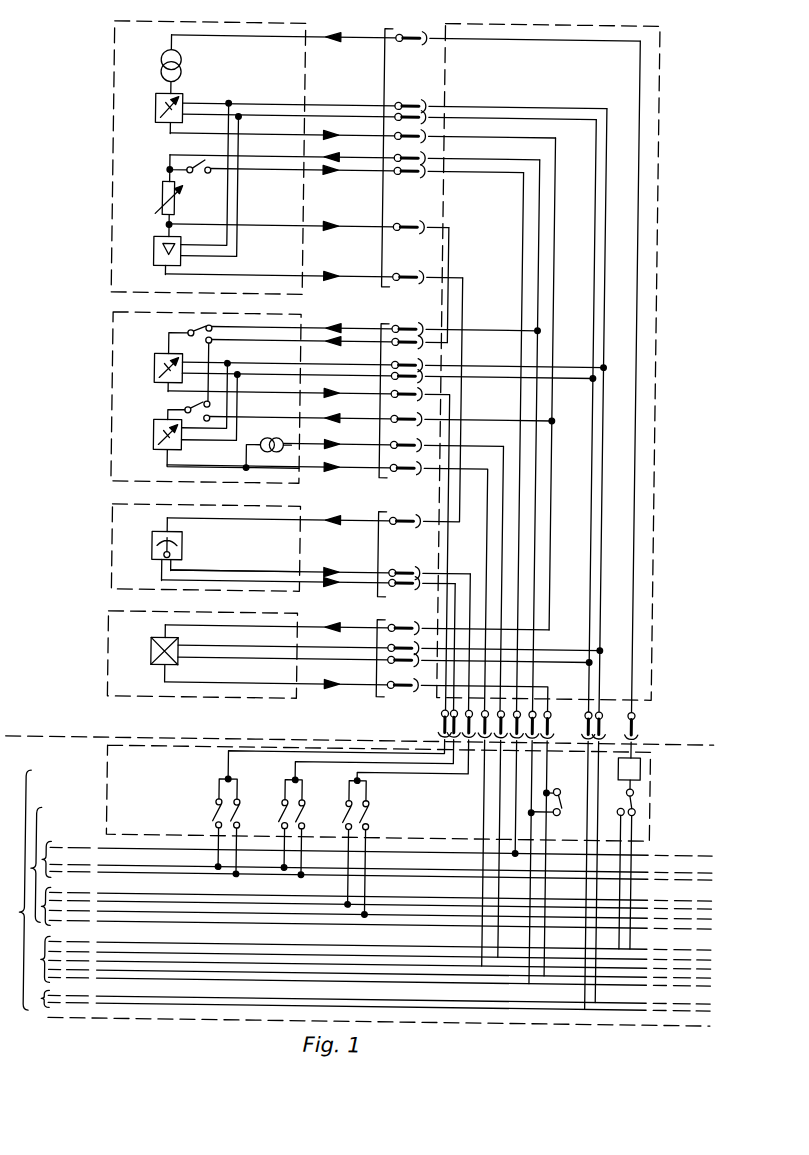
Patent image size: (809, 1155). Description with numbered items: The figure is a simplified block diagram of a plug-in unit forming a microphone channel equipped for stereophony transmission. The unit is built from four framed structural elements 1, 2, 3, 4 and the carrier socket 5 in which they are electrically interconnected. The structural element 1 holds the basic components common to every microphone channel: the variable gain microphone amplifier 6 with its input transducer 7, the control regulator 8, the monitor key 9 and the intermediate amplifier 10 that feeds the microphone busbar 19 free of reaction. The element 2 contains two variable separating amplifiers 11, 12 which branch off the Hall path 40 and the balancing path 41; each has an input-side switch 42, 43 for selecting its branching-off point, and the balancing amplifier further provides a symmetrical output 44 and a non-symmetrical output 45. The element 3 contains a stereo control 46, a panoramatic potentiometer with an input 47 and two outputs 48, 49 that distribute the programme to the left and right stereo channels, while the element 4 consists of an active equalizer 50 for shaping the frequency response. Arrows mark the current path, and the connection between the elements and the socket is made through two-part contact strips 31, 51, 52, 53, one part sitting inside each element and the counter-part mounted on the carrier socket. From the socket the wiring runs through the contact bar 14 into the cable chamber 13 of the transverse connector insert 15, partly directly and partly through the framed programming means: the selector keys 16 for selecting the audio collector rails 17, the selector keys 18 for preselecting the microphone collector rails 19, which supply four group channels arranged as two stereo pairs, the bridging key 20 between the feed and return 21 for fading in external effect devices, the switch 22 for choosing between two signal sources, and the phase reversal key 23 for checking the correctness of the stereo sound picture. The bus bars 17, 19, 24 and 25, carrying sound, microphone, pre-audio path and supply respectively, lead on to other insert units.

The structural element 1 is at (125, 205).
The structural element 2 is at (128, 390).
The structural element 3 is at (120, 522).
The structural element 4 is at (122, 645).
The carrier socket 5 is at (622, 222).
The variable gain microphone amplifier 6 is at (155, 108).
The input transducer 7 is at (160, 72).
The control regulator 8 is at (162, 196).
The monitor key 9 is at (188, 162).
The intermediate amplifier 10 is at (160, 250).
The variable separating amplifier 11 is at (155, 365).
The variable separating amplifier 12 is at (155, 432).
The cable chamber 13 is at (33, 879).
The contact bar 14 is at (639, 719).
The transverse connector insert 15 is at (128, 775).
The selector keys 16 is at (212, 808).
The audio collector rails 17 is at (56, 840).
The selector keys 18 is at (280, 807).
The microphone collector rails 19 is at (42, 854).
The bridging key 20 is at (567, 803).
The feed and return 21 is at (50, 1013).
The switch 22 is at (645, 800).
The phase reversal key 23 is at (644, 770).
The bus bar 24 is at (412, 852).
The bus bar 25 is at (58, 1024).
The contact strip 31 is at (404, 34).
The Hall path 40 is at (450, 407).
The balancing path 41 is at (493, 512).
The input-side switch 42 is at (200, 332).
The input-side switch 43 is at (196, 411).
The symmetrical output 44 is at (319, 443).
The non-symmetrical output 45 is at (319, 466).
The stereo control 46 is at (157, 552).
The input 47 is at (317, 519).
The output 48 is at (305, 573).
The output 49 is at (304, 586).
The active equalizer 50 is at (155, 660).
The contact strip 51 is at (379, 324).
The contact strip 52 is at (384, 512).
The contact strip 53 is at (386, 620).